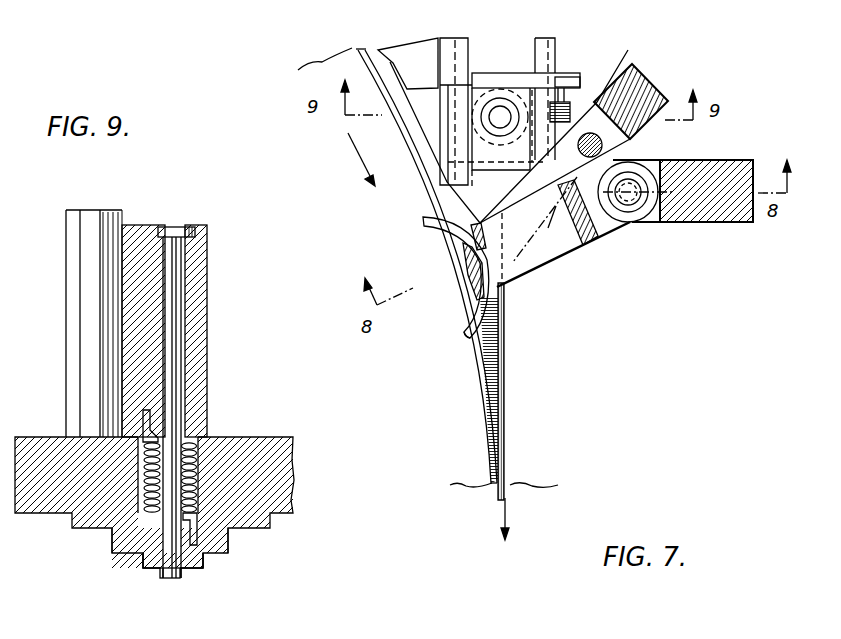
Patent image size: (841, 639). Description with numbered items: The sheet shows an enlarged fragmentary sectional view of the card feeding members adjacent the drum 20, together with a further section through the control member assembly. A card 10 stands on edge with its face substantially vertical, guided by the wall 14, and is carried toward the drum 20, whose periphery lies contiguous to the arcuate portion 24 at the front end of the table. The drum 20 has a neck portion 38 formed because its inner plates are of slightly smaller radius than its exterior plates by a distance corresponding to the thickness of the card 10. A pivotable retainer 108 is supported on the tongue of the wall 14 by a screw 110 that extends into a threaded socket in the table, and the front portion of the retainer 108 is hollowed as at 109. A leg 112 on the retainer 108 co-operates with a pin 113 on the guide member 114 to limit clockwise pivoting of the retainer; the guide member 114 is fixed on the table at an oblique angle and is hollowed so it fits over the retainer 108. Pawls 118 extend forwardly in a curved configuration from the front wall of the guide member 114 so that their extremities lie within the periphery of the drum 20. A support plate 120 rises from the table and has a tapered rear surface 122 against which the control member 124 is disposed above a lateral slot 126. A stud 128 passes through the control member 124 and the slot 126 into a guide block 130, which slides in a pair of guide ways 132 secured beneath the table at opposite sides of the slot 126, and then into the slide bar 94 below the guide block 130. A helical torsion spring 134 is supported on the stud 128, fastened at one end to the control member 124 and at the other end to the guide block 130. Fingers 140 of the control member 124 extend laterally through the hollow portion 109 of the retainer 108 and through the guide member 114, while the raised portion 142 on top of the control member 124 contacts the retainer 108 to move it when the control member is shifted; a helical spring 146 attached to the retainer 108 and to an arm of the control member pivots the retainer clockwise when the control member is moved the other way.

In FIG. 7, the card 10 is at (497, 493).
In FIG. 7, the wall 14 is at (738, 213).
In FIG. 7, the drum 20 is at (475, 486).
In FIG. 7, the arcuate portion 24 is at (510, 474).
In FIG. 7, the neck portion 38 is at (472, 312).
In FIG. 9, the slide bar 94 is at (186, 572).
In FIG. 7, the retainer 108 is at (625, 228).
In FIG. 7, the hollow portion 109 is at (575, 225).
In FIG. 7, the screw 110 is at (633, 196).
In FIG. 7, the leg 112 is at (581, 236).
In FIG. 7, the pin 113 is at (603, 145).
In FIG. 7, the guide member 114 is at (660, 81).
In FIG. 7, the pawl 118 is at (465, 337).
In FIG. 9, the support plate 120 is at (64, 330).
In FIG. 7, the support plate 120 is at (410, 40).
In FIG. 9, the rear surface 122 is at (126, 197).
In FIG. 7, the rear surface 122 is at (468, 58).
In FIG. 9, the control member 124 is at (207, 342).
In FIG. 7, the control member 124 is at (456, 188).
In FIG. 9, the slot 126 is at (202, 470).
In FIG. 7, the slot 126 is at (534, 53).
In FIG. 9, the stud 128 is at (177, 267).
In FIG. 7, the stud 128 is at (500, 117).
In FIG. 9, the guide block 130 is at (137, 541).
In FIG. 9, the guide way 132 is at (118, 545).
In FIG. 9, the helical torsion spring 134 is at (193, 492).
In FIG. 7, the finger 140 is at (495, 388).
In FIG. 7, the raised portion 142 is at (536, 199).
In FIG. 7, the helical spring 146 is at (548, 159).